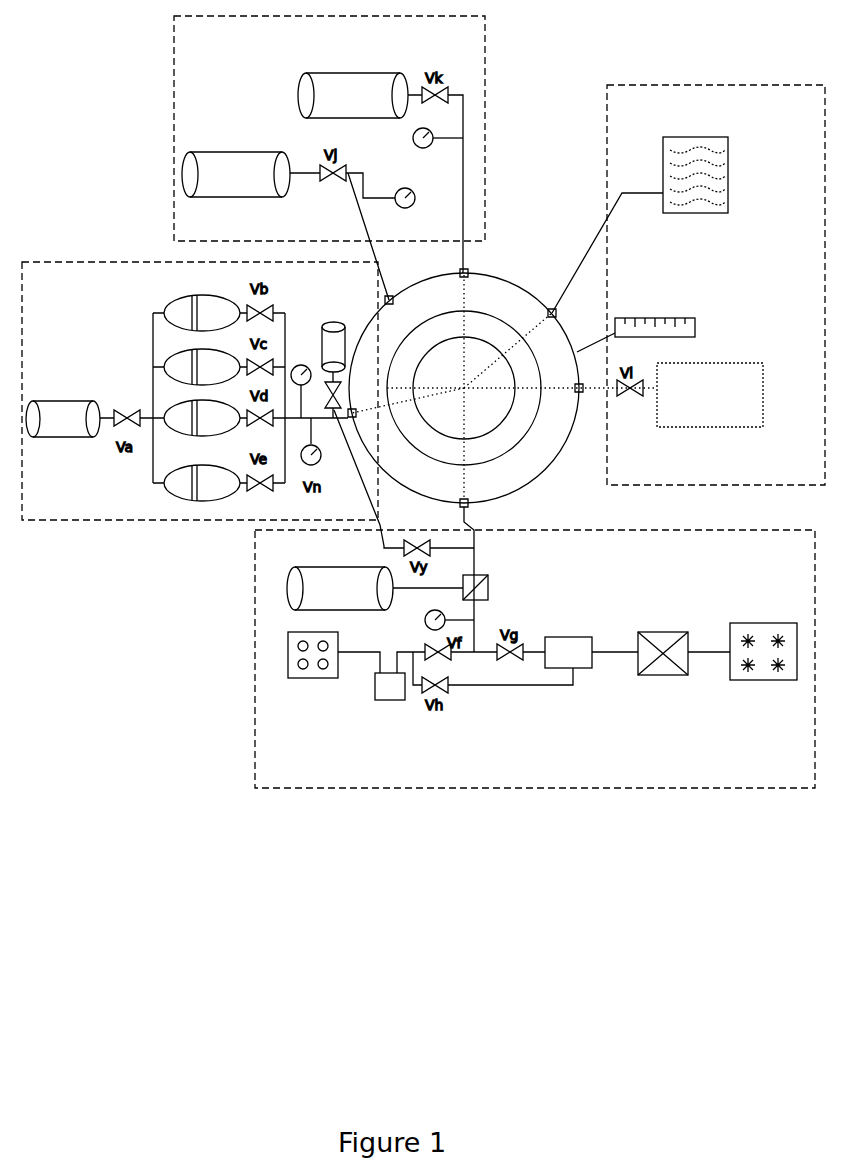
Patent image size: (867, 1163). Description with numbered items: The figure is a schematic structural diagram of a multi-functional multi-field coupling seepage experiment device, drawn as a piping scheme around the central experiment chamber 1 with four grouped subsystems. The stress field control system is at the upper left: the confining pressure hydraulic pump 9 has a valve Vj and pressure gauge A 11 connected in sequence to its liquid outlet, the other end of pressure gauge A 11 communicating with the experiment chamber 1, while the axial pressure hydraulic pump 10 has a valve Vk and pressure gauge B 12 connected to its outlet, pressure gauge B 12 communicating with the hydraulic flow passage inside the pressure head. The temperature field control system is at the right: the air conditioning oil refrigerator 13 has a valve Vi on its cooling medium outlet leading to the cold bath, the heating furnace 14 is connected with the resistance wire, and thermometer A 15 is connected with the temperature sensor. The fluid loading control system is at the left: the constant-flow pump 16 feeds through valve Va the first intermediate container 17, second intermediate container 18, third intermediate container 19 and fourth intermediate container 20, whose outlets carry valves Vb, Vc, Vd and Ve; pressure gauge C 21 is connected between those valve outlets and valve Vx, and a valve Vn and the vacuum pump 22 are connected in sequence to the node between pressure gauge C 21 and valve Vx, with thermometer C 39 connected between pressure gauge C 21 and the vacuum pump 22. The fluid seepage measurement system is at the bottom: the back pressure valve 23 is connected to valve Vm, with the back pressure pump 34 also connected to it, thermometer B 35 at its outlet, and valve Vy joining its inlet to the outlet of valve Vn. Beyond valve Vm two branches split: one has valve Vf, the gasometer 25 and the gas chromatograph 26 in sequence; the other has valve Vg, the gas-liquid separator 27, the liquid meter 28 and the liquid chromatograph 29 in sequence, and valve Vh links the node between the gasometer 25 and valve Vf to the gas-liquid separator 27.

The experiment chamber 1 is at (473, 345).
The confining pressure hydraulic pump 9 is at (248, 167).
The axial pressure hydraulic pump 10 is at (333, 92).
The pressure gauge A 11 is at (408, 190).
The pressure gauge B 12 is at (462, 188).
The air conditioning oil refrigerator 13 is at (712, 378).
The heating furnace 14 is at (685, 150).
The thermometer A 15 is at (640, 318).
The constant-flow pump 16 is at (67, 427).
The first intermediate container 17 is at (177, 312).
The second intermediate container 18 is at (170, 367).
The third intermediate container 19 is at (185, 418).
The fourth intermediate container 20 is at (183, 488).
The pressure gauge C 21 is at (299, 366).
The vacuum pump 22 is at (334, 322).
The back pressure valve 23 is at (490, 585).
The gasometer 25 is at (378, 700).
The gas chromatograph 26 is at (288, 657).
The gas-liquid separator 27 is at (572, 648).
The liquid meter 28 is at (652, 637).
The liquid chromatograph 29 is at (762, 637).
The back pressure pump 34 is at (315, 602).
The thermometer B 35 is at (427, 615).
The thermometer C 39 is at (340, 415).